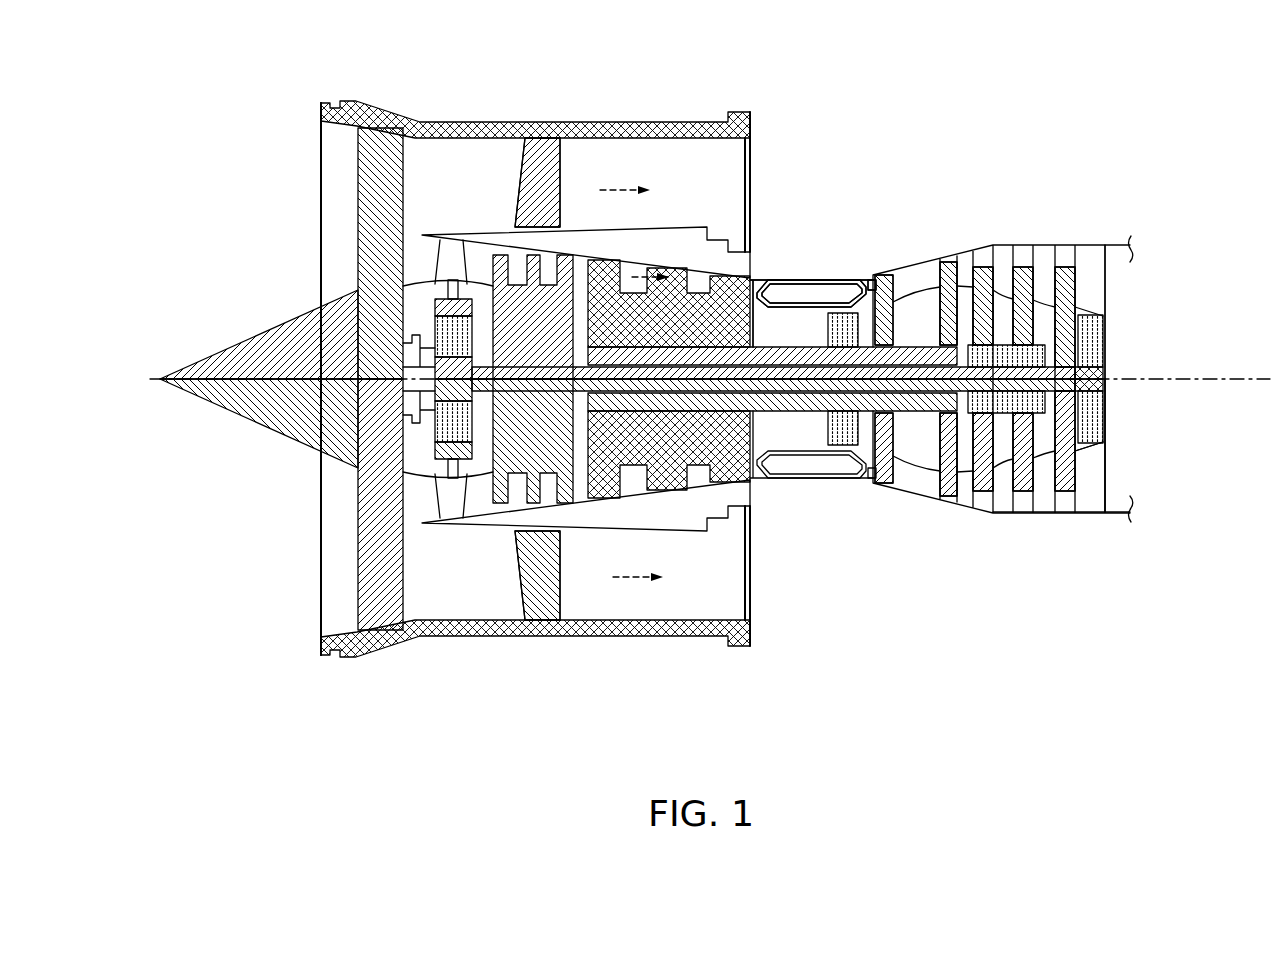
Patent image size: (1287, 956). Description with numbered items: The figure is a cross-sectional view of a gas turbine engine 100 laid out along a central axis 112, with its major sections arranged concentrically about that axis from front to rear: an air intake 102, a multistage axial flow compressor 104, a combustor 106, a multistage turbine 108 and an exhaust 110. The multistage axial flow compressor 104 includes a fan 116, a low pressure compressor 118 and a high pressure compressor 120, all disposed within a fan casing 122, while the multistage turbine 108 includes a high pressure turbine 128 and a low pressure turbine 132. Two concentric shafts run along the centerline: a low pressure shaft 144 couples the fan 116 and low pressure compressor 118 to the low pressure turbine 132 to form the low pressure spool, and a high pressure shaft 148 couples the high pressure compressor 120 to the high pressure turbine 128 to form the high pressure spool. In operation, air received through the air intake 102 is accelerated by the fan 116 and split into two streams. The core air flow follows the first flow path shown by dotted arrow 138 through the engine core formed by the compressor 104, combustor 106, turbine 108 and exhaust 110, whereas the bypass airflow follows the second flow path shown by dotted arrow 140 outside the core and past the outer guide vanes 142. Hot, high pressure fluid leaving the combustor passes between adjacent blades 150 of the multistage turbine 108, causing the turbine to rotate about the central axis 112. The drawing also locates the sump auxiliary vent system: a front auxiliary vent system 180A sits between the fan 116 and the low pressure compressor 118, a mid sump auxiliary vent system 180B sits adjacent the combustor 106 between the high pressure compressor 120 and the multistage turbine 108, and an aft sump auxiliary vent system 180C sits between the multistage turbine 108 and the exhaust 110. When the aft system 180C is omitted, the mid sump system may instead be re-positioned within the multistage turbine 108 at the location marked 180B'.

The gas turbine engine 100 is at (1183, 181).
The air intake 102 is at (292, 505).
The multistage axial flow compressor 104 is at (548, 688).
The combustor 106 is at (815, 468).
The multistage turbine 108 is at (1003, 610).
The exhaust 110 is at (1158, 483).
The central axis 112 is at (160, 378).
The fan 116 is at (357, 222).
The low pressure compressor 118 is at (563, 505).
The high pressure compressor 120 is at (735, 280).
The fan casing 122 is at (372, 110).
The high pressure turbine 128 is at (917, 258).
The low pressure turbine 132 is at (1043, 518).
The dotted arrow (first flow path) 138 is at (636, 277).
The dotted arrow (second flow path) 140 is at (612, 190).
The outer guide vanes 142 is at (541, 163).
The low pressure shaft 144 is at (485, 472).
The high pressure shaft 148 is at (782, 345).
The blades 150 is at (1063, 256).
The front auxiliary vent system 180A is at (428, 441).
The mid sump auxiliary vent system 180B is at (854, 341).
The re-positioned mid sump auxiliary vent system 180B' is at (1016, 306).
The aft sump auxiliary vent system 180C is at (1105, 318).